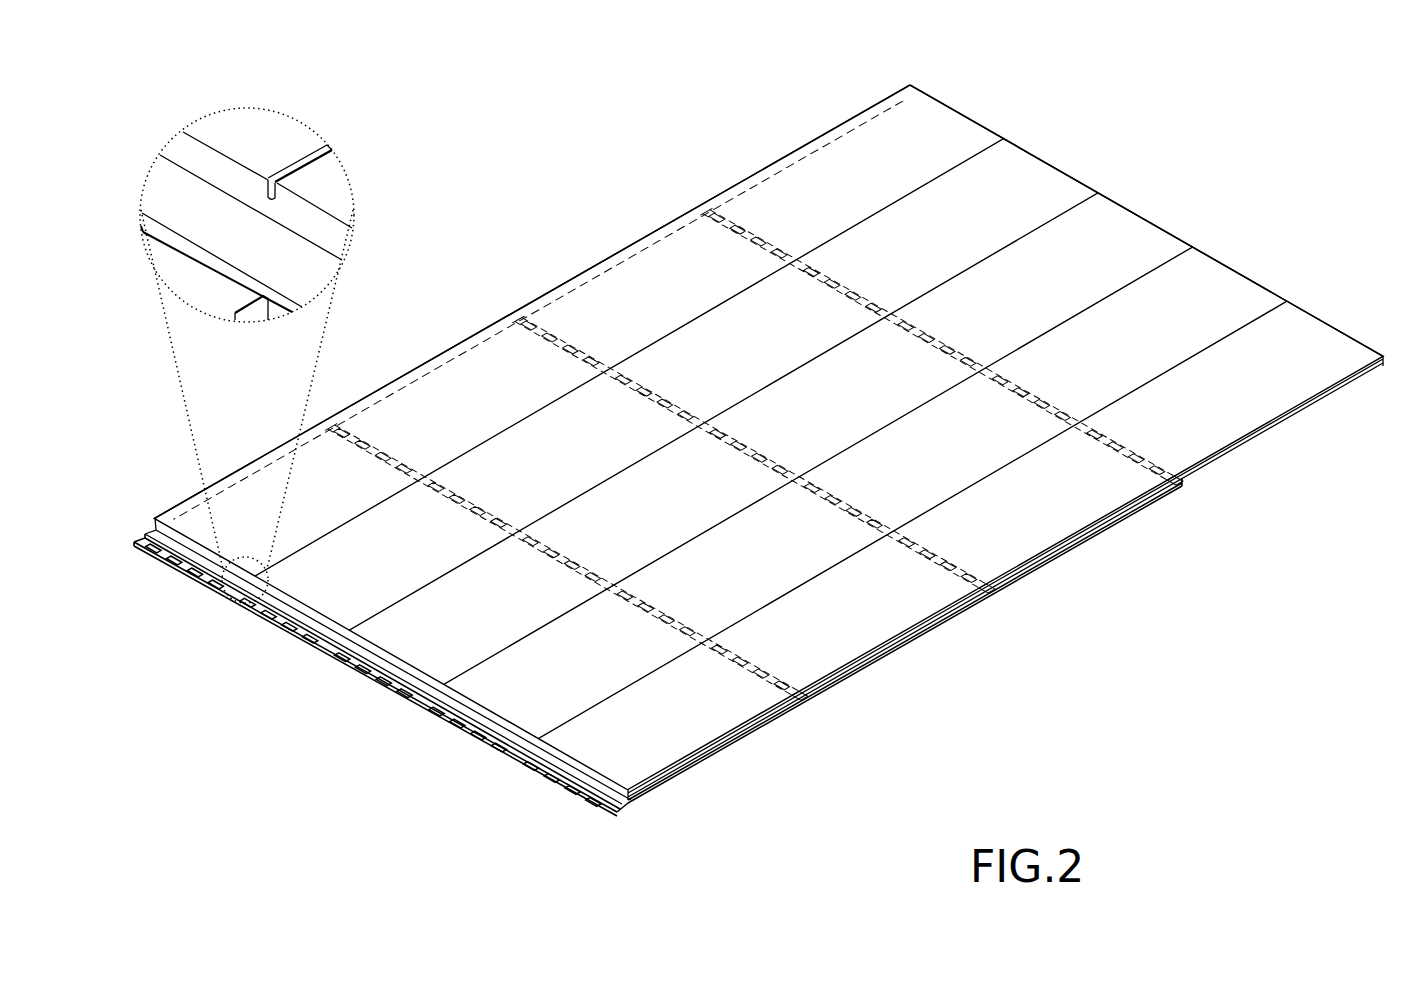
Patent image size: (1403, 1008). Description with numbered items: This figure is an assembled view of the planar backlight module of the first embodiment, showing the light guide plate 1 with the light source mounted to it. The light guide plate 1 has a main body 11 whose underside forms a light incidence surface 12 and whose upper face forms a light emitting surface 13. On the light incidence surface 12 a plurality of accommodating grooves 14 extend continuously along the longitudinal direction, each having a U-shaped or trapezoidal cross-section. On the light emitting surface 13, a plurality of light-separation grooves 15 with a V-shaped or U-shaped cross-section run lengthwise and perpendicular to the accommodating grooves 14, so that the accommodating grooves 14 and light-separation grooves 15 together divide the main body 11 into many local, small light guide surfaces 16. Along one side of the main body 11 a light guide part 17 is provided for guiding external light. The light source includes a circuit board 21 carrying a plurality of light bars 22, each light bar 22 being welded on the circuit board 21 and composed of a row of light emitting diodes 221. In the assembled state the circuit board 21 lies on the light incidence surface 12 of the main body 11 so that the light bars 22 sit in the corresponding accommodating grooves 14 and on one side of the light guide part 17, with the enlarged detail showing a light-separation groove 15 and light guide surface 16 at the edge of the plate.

The light guide plate 1 is at (622, 237).
The main body 11 is at (583, 272).
The light incidence surface 12 is at (1273, 433).
The light emitting surface 13 is at (1113, 238).
The accommodating grooves 14 is at (993, 588).
The light-separation grooves 15 is at (1050, 220).
The light guide surface 16 is at (478, 376).
The light guide part 17 is at (388, 668).
The circuit board 21 is at (763, 730).
The light bars 22 is at (617, 812).
The light emitting diodes 221 is at (543, 780).